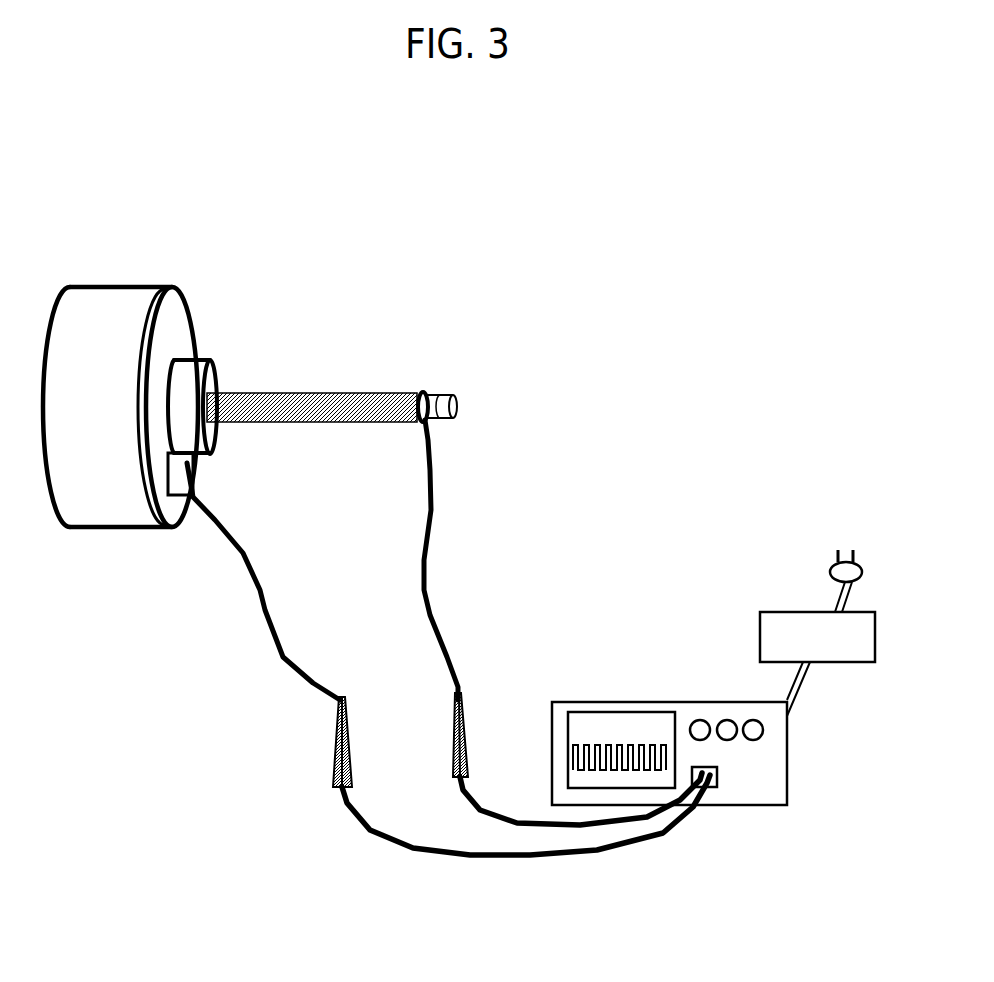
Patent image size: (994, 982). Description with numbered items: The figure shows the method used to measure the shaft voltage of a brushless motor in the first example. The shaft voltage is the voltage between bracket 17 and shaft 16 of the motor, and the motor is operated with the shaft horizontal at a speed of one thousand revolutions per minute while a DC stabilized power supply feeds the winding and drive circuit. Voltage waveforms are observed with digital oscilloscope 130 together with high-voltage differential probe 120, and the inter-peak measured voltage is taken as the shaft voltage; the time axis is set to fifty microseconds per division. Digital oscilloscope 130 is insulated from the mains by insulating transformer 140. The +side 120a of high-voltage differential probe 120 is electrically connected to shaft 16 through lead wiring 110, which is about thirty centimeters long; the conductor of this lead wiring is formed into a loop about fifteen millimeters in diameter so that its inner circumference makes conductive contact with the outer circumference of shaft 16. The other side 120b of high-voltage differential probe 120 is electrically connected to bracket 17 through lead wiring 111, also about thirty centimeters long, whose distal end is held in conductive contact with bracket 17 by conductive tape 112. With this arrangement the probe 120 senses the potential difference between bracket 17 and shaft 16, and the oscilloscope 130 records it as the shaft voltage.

The bracket 17 is at (173, 328).
The shaft 16 is at (313, 405).
The conductive tape 112 is at (195, 473).
The lead wiring 110 is at (425, 582).
The lead wiring 111 is at (262, 605).
The +side of high-voltage differential probe 120a is at (465, 747).
The side of high-voltage differential probe 120b is at (335, 773).
The high-voltage differential probe 120 is at (570, 855).
The digital oscilloscope 130 is at (627, 740).
The insulating transformer 140 is at (783, 635).